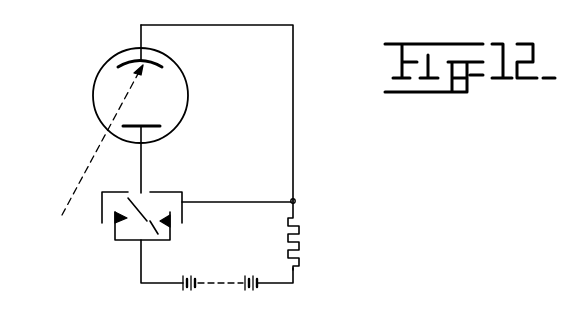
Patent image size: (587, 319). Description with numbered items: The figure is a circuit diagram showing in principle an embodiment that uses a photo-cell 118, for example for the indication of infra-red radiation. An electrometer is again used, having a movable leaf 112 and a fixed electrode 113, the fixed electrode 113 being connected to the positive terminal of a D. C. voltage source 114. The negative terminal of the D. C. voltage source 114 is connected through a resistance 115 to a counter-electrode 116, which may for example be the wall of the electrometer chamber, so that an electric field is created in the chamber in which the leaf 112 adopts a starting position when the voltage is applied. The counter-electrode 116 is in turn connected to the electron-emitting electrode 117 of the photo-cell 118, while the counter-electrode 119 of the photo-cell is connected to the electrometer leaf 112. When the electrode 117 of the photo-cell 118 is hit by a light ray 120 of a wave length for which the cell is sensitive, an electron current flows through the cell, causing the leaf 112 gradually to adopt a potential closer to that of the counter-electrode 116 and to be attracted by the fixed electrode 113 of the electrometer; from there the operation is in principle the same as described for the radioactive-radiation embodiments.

The movable leaf 112 is at (144, 214).
The fixed electrode 113 is at (121, 241).
The D. C. voltage source 114 is at (190, 289).
The resistance 115 is at (300, 248).
The counter-electrode 116 is at (182, 191).
The electron-emitting electrode 117 is at (122, 63).
The photo-cell 118 is at (93, 80).
The counter-electrode of the photo-cell 119 is at (158, 124).
The light ray 120 is at (91, 162).